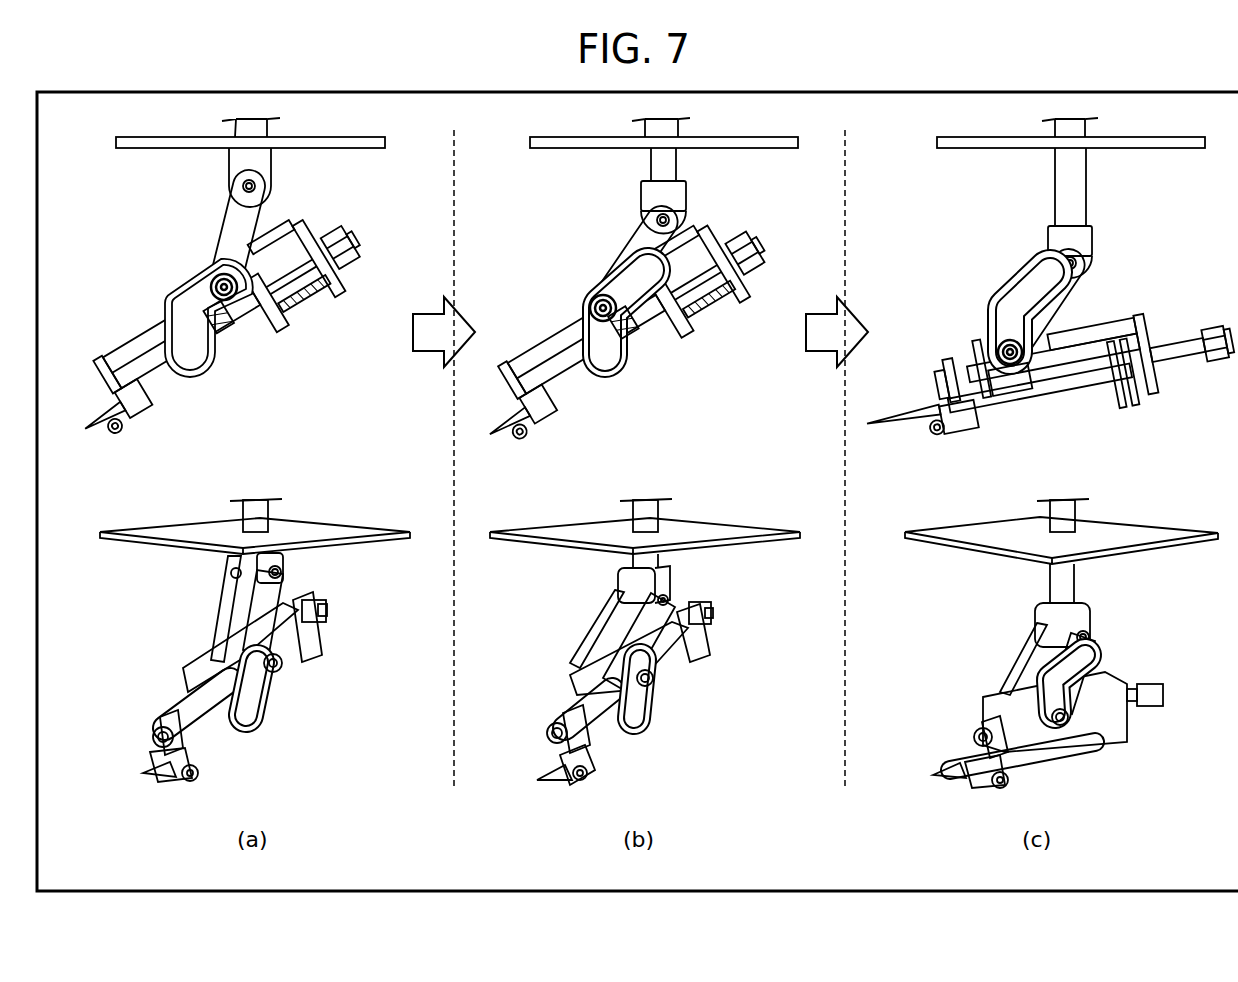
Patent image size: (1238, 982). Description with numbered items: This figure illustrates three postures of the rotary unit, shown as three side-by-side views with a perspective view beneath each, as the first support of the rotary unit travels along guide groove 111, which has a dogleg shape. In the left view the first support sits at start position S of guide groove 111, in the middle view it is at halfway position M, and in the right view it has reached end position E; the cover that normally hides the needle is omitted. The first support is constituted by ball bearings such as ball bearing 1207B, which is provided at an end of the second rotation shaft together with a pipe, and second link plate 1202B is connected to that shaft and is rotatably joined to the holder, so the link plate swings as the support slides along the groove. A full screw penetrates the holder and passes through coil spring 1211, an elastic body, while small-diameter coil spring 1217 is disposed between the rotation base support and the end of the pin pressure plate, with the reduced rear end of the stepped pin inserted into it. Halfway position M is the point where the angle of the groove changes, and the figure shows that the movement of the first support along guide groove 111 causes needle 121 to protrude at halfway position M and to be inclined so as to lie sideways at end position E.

The second link plate 1202B is at (254, 203).
The ball bearing 1207B is at (214, 270).
The halfway position M is at (200, 296).
The start position S is at (257, 313).
The end position E is at (192, 355).
The coil spring 1211 is at (200, 302).
The guide groove 111 is at (163, 320).
The needle 121 is at (100, 420).
The small-diameter coil spring 1217 is at (313, 298).